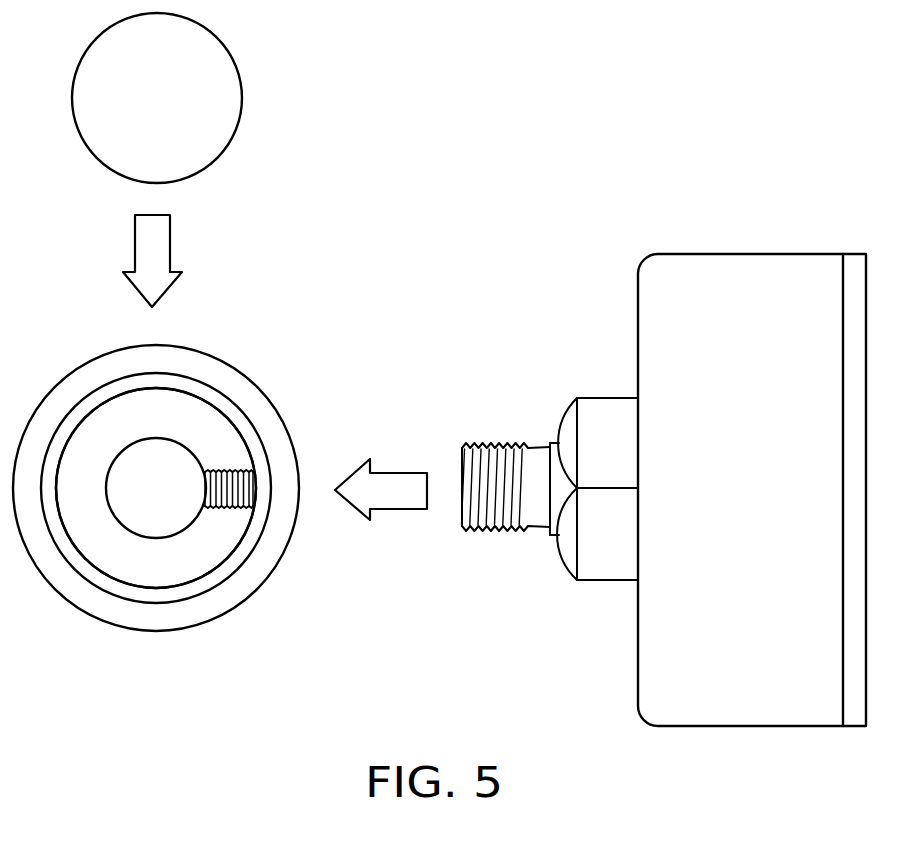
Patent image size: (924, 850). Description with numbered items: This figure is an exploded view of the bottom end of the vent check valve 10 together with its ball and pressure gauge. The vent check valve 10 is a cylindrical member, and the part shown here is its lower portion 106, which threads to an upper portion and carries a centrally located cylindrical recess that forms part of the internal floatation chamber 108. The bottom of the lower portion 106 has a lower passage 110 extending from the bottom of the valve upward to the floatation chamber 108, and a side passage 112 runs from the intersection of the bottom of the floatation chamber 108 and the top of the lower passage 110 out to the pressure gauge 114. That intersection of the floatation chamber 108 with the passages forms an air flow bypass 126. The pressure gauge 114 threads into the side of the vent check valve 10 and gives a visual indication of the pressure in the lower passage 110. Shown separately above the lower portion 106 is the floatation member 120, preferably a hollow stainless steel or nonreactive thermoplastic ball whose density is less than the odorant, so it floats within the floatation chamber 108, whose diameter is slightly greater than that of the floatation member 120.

The vent check valve 10 is at (196, 523).
The lower portion 106 is at (258, 387).
The floatation chamber 108 is at (100, 483).
The lower passage 110 is at (177, 502).
The side passage 112 is at (225, 503).
The pressure gauge 114 is at (767, 512).
The floatation member 120 is at (175, 117).
The air flow bypass 126 is at (213, 448).